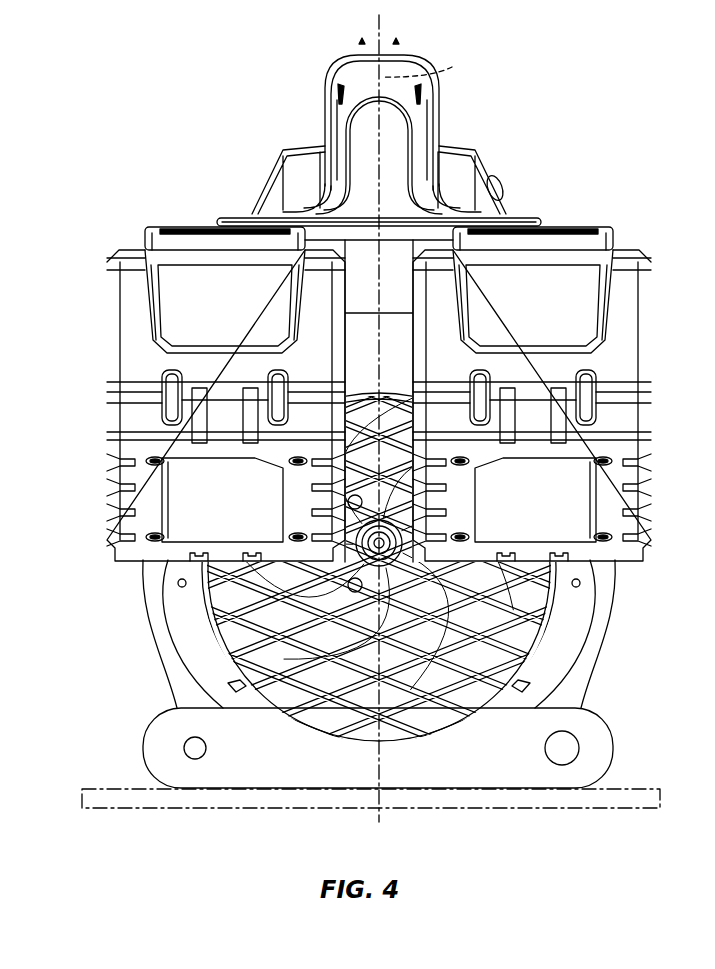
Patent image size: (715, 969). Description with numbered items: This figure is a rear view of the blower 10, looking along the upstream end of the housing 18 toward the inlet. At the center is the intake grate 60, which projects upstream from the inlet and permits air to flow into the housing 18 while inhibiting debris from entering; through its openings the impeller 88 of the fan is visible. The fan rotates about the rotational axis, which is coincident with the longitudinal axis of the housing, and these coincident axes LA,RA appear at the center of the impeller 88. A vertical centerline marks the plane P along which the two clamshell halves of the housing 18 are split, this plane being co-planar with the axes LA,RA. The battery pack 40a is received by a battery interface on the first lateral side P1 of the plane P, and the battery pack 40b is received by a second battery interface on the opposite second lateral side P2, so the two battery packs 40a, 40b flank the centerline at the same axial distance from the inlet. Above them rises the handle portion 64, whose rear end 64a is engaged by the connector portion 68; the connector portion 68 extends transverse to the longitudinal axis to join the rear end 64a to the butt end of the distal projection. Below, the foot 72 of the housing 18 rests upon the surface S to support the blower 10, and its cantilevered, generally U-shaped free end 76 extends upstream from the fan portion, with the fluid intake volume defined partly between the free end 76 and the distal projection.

The blower 10 is at (380, 437).
The housing 18 is at (363, 273).
The battery pack 40a is at (648, 354).
The battery pack 40b is at (108, 352).
The intake grate 60 is at (493, 603).
The handle portion 64 is at (360, 78).
The rear end 64a is at (325, 118).
The connector portion 68 is at (363, 175).
The foot 72 is at (598, 745).
The free end 76 is at (488, 743).
The impeller 88 is at (280, 662).
The longitudinal axis and rotational axis LA,RA is at (382, 543).
The plane P is at (426, 65).
The first lateral side P1 is at (395, 42).
The second lateral side P2 is at (362, 42).
The surface S is at (628, 808).